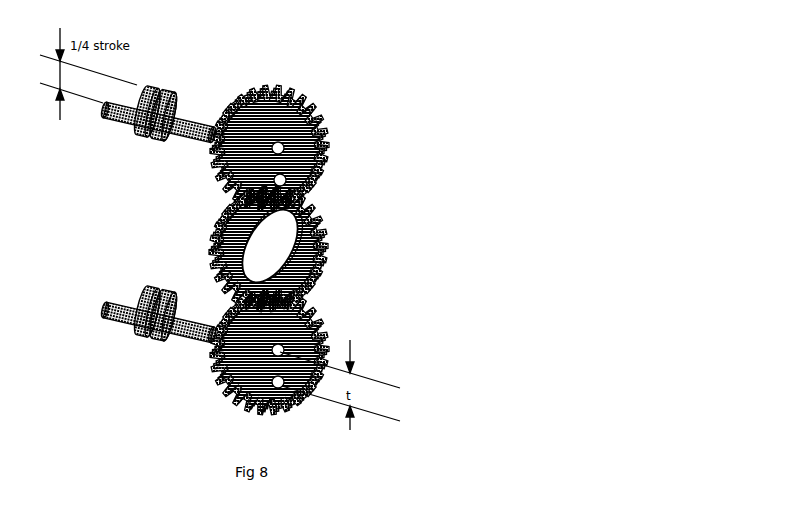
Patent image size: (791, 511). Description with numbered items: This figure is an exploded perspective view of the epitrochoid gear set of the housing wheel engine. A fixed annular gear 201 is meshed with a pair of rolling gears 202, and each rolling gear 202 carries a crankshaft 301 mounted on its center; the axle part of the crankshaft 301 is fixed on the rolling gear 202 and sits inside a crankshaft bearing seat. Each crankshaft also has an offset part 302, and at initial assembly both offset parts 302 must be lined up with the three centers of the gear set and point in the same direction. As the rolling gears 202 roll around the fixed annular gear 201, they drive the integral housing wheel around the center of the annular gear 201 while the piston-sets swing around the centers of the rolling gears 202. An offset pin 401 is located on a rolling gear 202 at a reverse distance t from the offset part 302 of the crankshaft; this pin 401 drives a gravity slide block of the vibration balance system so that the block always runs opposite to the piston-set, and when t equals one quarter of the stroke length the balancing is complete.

The fixed annular gear 201 is at (322, 218).
The rolling gear 202 is at (322, 113).
The crankshaft 301 is at (192, 122).
The offset part of the crankshaft 302 is at (162, 88).
The offset pin 401 is at (300, 186).